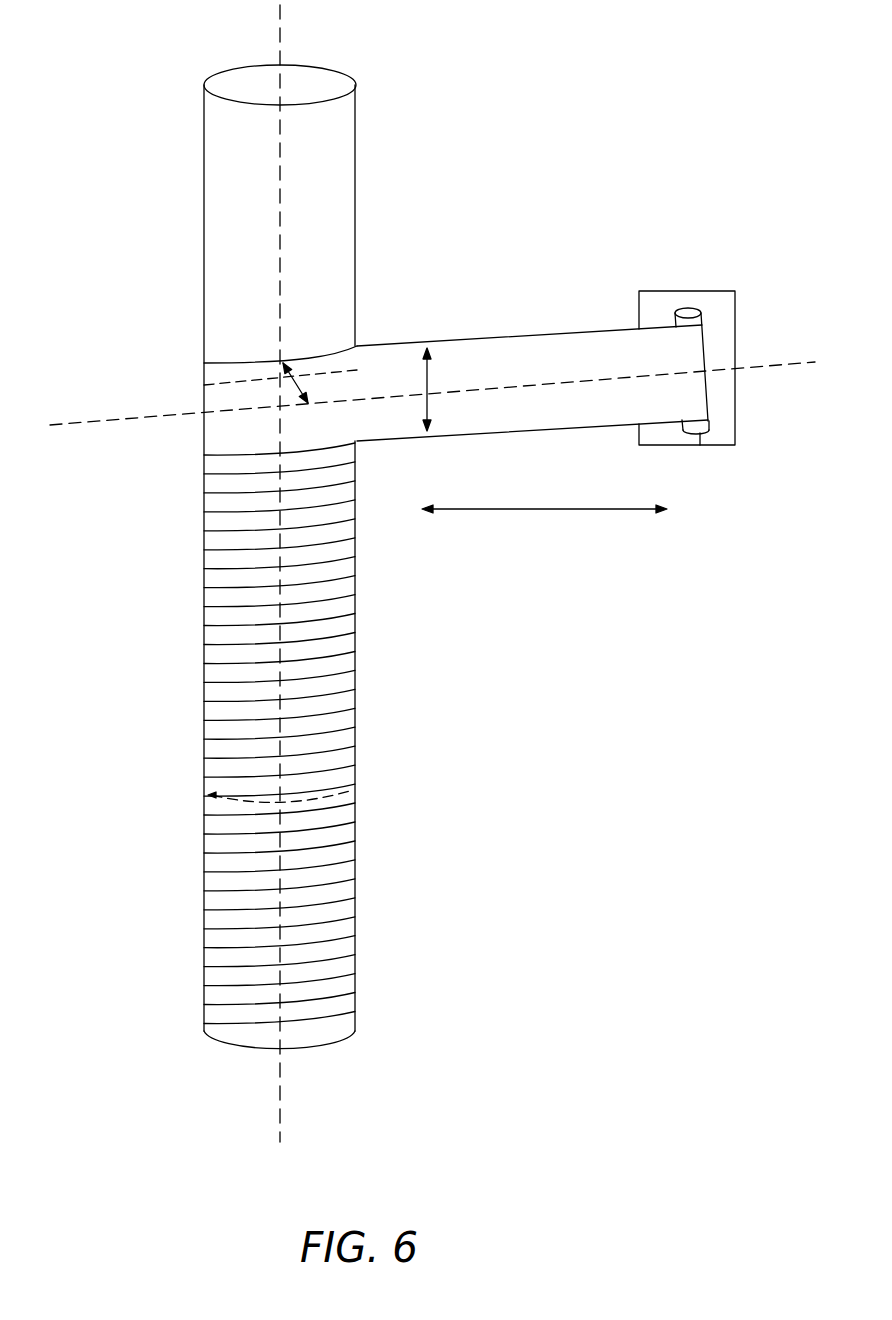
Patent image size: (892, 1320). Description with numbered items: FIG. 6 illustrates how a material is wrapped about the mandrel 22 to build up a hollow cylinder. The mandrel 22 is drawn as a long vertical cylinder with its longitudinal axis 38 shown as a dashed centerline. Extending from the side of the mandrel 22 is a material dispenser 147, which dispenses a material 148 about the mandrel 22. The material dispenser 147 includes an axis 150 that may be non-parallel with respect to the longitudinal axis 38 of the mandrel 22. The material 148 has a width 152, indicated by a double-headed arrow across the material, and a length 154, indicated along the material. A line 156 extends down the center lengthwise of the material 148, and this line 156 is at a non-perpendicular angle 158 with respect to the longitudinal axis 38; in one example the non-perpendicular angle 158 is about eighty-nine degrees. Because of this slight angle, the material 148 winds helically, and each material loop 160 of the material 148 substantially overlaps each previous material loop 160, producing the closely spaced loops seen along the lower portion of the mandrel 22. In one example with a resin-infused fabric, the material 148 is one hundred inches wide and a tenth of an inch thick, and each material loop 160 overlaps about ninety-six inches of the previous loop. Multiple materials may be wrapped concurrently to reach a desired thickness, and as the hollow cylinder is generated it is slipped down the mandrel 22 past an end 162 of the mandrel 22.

The mandrel 22 is at (330, 132).
The longitudinal axis 38 is at (280, 33).
The material dispenser 147 is at (737, 305).
The material 148 is at (537, 350).
The axis 150 is at (688, 309).
The width 152 is at (430, 402).
The length 154 is at (544, 524).
The line 156 is at (585, 384).
The non-perpendicular angle 158 is at (313, 387).
The material loop 160 is at (212, 445).
The end 162 is at (380, 790).